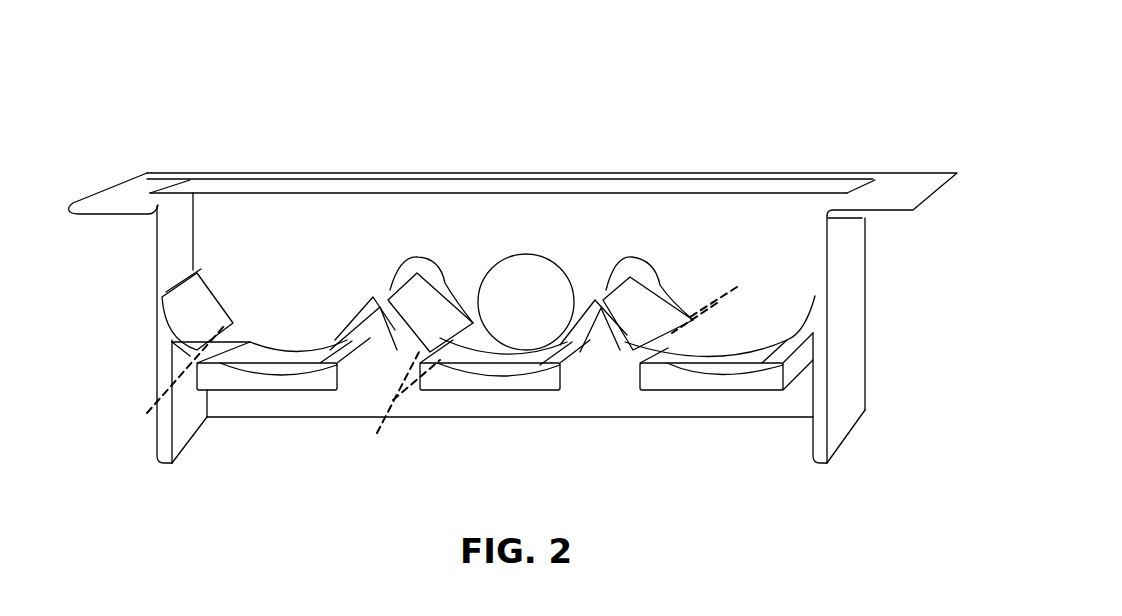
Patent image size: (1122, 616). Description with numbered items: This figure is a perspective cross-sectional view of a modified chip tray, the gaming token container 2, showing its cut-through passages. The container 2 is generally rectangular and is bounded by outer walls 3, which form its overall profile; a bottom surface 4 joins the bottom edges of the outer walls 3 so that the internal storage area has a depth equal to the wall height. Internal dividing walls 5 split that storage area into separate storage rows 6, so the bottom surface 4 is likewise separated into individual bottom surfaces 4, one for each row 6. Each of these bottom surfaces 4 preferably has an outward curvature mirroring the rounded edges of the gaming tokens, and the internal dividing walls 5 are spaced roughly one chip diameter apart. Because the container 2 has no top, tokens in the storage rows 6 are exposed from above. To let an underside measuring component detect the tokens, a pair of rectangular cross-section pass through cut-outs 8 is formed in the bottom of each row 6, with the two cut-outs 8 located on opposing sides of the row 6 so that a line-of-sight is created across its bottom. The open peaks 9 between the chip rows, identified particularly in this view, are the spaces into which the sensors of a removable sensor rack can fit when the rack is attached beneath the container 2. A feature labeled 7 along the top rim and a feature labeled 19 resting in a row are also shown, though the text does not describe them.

The gaming token container 2 is at (312, 70).
The outer walls 3 is at (170, 257).
The bottom surface 4 is at (272, 392).
The internal dividing walls 5 is at (410, 275).
The storage rows 6 is at (284, 281).
The flange 7 is at (133, 193).
The pass through cut-outs 8 is at (441, 362).
The open peaks 9 is at (376, 353).
The ball 19 is at (523, 280).